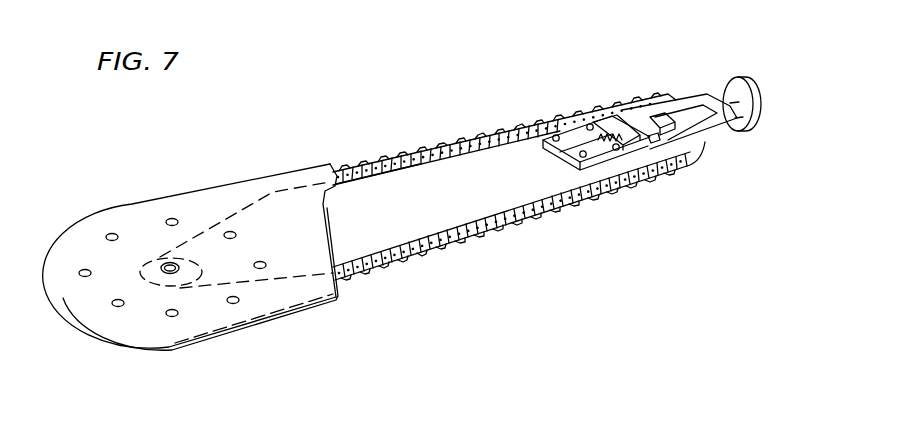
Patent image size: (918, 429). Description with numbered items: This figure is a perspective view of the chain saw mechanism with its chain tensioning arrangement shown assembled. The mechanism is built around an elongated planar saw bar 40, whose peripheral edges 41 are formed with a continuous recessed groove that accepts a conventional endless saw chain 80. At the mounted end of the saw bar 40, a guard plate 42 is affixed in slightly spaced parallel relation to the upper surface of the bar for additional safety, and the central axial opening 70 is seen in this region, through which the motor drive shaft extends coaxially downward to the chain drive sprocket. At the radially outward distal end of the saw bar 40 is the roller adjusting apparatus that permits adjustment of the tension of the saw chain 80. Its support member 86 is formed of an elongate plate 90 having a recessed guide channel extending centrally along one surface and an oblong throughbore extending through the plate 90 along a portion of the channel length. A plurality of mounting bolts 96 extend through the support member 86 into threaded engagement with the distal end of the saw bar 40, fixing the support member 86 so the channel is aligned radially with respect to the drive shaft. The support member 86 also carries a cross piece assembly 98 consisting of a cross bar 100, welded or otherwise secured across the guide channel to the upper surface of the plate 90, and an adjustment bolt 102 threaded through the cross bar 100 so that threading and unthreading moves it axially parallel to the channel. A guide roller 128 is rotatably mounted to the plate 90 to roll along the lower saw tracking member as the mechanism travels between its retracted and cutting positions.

The guard plate 42 is at (207, 184).
The central axial opening 70 is at (165, 276).
The saw bar 40 is at (415, 220).
The peripheral edges 41 is at (453, 233).
The saw chain 80 is at (610, 190).
The support member 86 is at (568, 172).
The mounting bolts 96 is at (527, 128).
The adjustment bolt 102 is at (597, 140).
The cross bar 100 is at (623, 103).
The plate 90 is at (710, 125).
The cross piece assembly 98 is at (653, 139).
The guide roller 128 is at (757, 97).